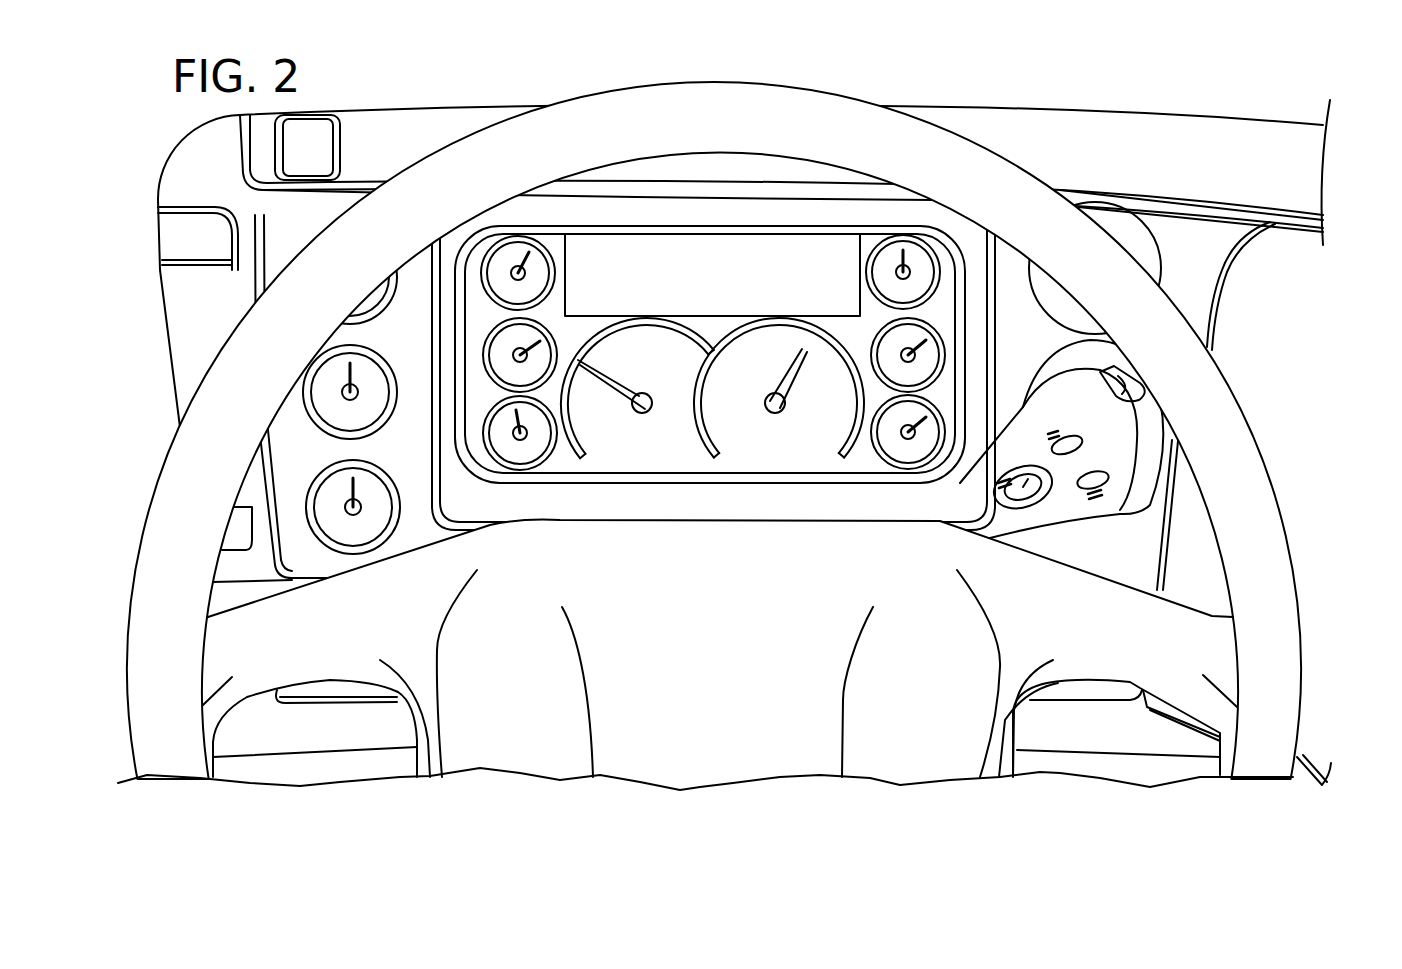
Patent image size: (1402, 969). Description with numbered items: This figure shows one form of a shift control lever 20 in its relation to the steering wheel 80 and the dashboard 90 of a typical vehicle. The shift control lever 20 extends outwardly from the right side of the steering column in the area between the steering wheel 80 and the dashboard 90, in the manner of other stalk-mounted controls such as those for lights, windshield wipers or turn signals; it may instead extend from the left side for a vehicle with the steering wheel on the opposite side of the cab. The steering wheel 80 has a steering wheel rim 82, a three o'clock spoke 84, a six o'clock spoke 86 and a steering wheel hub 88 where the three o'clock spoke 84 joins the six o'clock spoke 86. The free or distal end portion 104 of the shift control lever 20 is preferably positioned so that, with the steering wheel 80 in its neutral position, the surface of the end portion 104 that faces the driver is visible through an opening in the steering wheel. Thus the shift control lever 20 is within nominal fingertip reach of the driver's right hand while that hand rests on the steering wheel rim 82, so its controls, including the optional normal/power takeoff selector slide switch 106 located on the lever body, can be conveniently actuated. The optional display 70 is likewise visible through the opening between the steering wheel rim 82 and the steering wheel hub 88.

The shift control lever 20 is at (1097, 465).
The display 70 is at (777, 251).
The steering wheel 80 is at (1020, 168).
The steering wheel rim 82 is at (1293, 565).
The three o'clock spoke 84 is at (1220, 660).
The six o'clock spoke 86 is at (233, 648).
The steering wheel hub 88 is at (713, 673).
The dashboard 90 is at (867, 243).
The distal end portion 104 is at (1124, 386).
The slide switch 106 is at (1095, 605).